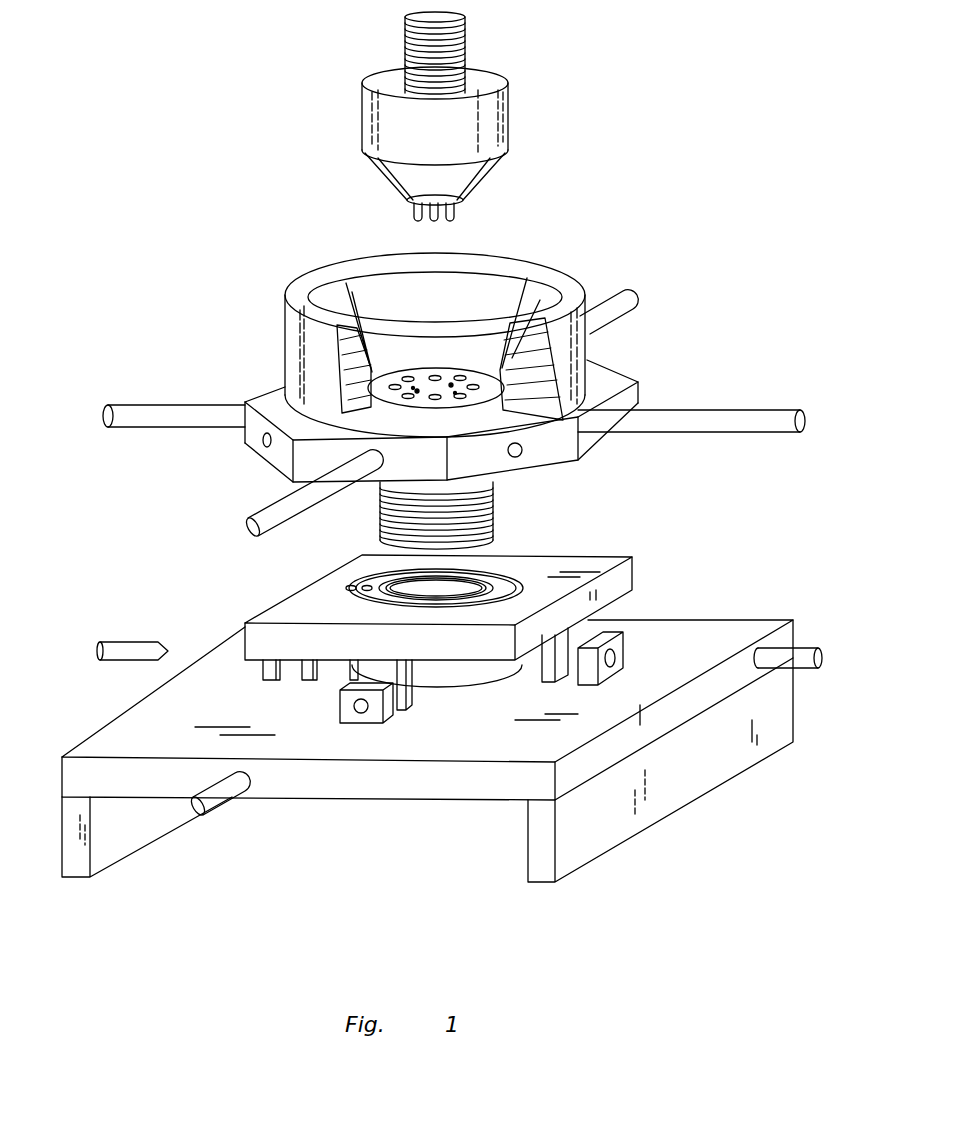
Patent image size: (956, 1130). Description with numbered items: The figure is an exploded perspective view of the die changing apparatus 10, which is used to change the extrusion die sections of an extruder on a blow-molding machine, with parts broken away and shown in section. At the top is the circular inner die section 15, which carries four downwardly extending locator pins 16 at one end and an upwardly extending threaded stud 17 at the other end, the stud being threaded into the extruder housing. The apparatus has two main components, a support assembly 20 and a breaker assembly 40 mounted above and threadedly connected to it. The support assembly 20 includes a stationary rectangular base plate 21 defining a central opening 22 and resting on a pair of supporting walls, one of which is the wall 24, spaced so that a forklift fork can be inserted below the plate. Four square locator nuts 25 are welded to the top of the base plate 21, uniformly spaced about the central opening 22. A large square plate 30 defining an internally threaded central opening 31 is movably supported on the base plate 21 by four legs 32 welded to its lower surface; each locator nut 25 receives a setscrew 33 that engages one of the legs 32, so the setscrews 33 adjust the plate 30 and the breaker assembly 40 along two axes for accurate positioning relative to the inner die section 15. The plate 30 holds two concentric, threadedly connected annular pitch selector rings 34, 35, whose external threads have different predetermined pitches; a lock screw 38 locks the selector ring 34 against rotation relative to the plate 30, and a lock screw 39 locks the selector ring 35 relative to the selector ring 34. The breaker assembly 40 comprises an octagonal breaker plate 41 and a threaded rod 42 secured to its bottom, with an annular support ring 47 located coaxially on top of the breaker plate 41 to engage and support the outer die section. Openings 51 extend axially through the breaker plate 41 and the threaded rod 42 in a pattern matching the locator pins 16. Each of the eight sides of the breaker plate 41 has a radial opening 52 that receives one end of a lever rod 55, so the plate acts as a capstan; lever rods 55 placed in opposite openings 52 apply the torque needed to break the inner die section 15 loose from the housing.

The die changing apparatus 10 is at (690, 241).
The inner die section 15 is at (577, 145).
The locator pins 16 is at (440, 226).
The threaded stud 17 is at (470, 57).
The support assembly 20 is at (734, 566).
The base plate 21 is at (752, 621).
The central opening 22 is at (470, 688).
The supporting wall 24 is at (582, 847).
The locator nuts 25 is at (627, 658).
The plate 30 is at (447, 581).
The central opening 31 is at (472, 605).
The legs 32 is at (663, 595).
The setscrews 33 is at (242, 842).
The pitch selector ring 34 is at (518, 590).
The pitch selector ring 35 is at (500, 592).
The lock screw 38 is at (351, 587).
The lock screw 39 is at (367, 585).
The breaker assembly 40 is at (739, 357).
The breaker plate 41 is at (600, 405).
The threaded rod 42 is at (493, 505).
The support ring 47 is at (285, 328).
The openings 51 is at (473, 385).
The radial openings 52 is at (600, 474).
The lever rods 55 is at (218, 514).